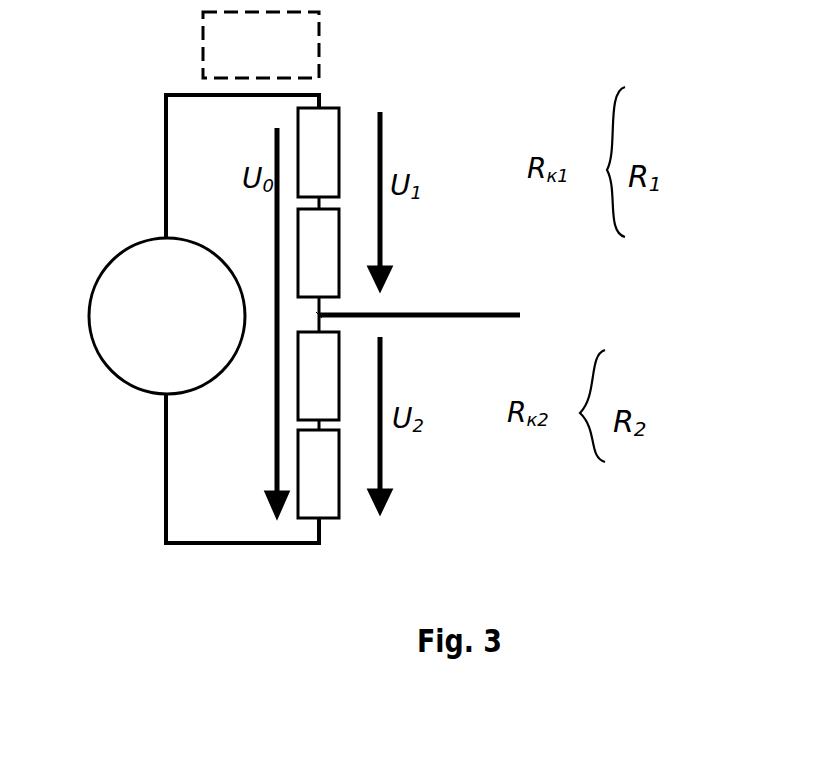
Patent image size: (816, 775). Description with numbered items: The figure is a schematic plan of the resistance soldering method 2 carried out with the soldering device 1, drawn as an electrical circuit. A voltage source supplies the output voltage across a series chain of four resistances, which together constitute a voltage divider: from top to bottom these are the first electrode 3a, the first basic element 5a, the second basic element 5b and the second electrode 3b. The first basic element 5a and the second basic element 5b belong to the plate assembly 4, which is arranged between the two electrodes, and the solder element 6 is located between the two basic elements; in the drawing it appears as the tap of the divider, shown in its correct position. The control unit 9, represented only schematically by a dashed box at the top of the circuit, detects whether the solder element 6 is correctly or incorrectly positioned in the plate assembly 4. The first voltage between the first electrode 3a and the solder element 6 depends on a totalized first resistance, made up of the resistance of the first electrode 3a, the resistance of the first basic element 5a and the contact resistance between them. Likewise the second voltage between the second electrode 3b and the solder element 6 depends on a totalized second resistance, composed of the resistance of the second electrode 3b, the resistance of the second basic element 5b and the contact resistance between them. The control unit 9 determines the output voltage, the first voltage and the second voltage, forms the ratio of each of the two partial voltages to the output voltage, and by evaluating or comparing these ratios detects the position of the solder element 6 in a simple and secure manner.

The soldering device 1 is at (143, 153).
The resistance soldering method 2 is at (582, 39).
The first electrode 3a is at (323, 138).
The first basic element 5a is at (327, 243).
The second basic element 5b is at (320, 380).
The second electrode 3b is at (325, 467).
The plate assembly 4 is at (583, 289).
The solder element 6 is at (482, 313).
The control unit 9 is at (270, 57).